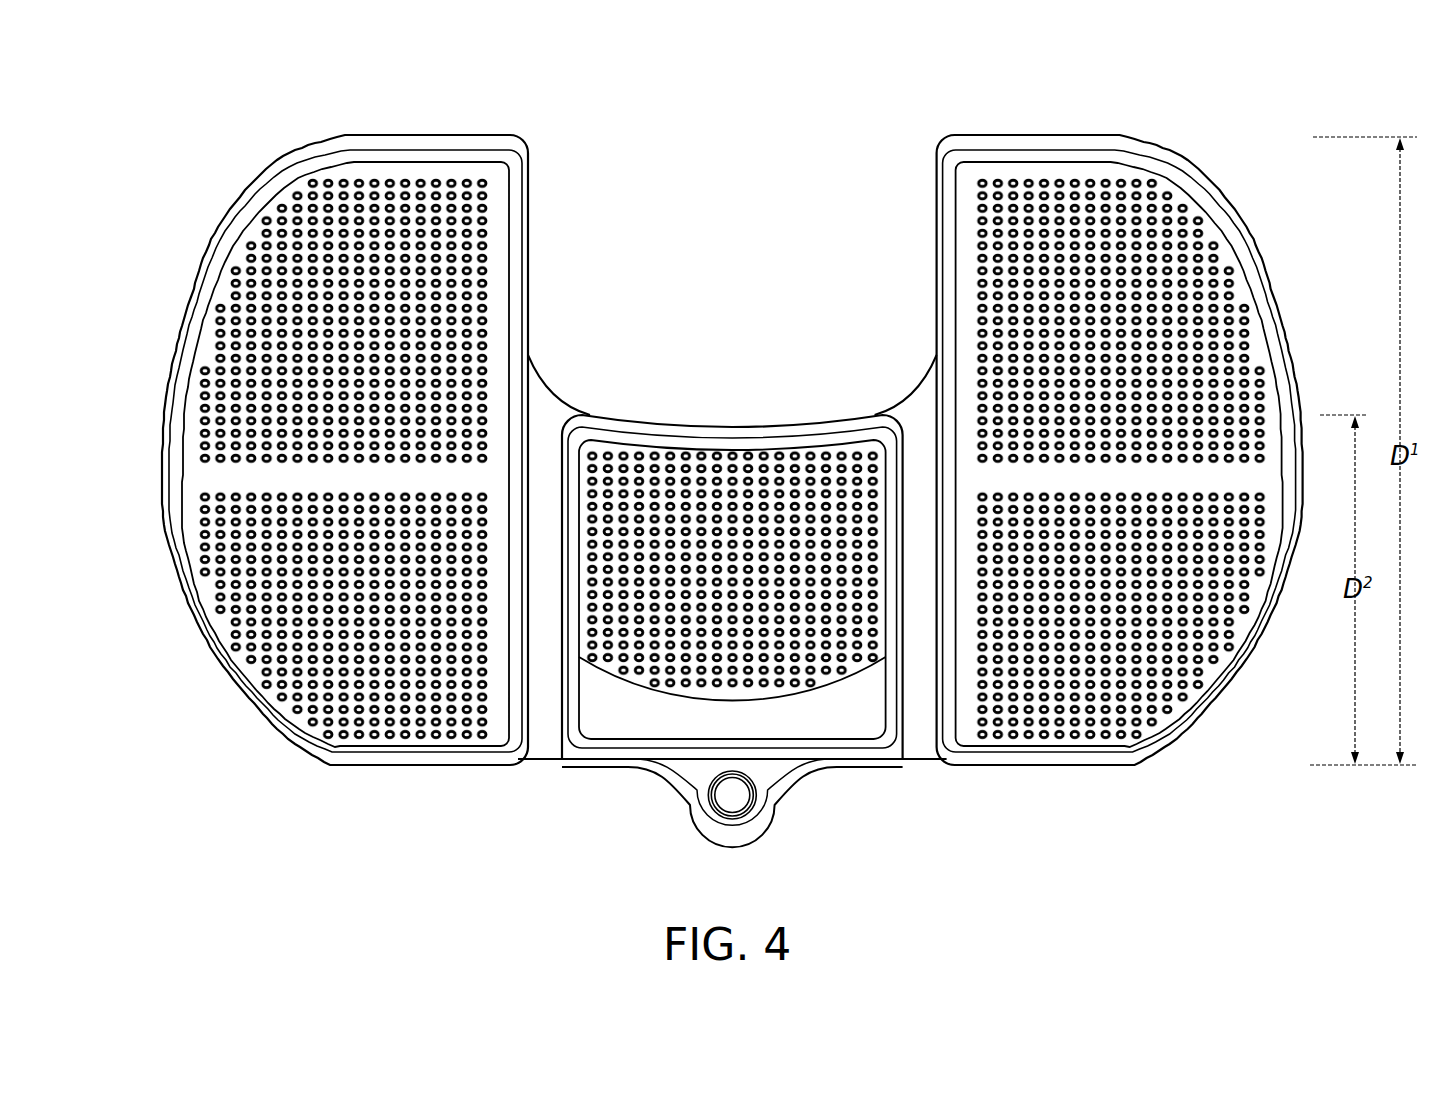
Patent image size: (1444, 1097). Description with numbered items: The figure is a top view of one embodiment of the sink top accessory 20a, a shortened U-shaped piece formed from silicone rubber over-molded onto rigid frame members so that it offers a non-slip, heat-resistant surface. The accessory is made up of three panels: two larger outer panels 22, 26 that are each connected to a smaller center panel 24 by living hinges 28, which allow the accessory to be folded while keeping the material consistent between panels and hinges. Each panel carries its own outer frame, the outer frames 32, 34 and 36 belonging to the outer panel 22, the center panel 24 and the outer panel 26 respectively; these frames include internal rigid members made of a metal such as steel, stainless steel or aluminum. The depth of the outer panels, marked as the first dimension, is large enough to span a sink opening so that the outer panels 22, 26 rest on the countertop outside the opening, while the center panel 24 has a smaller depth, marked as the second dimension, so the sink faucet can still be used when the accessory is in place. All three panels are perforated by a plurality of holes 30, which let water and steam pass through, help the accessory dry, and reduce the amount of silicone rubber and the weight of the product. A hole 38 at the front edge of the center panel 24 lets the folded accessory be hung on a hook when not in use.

The sink top accessory 20a is at (710, 458).
The outer panel 22 is at (334, 412).
The center panel 24 is at (732, 543).
The outer panel 26 is at (1120, 416).
The living hinge 28 is at (537, 748).
The holes 30 is at (202, 492).
The outer frame 32 is at (262, 177).
The outer frame 34 is at (837, 426).
The outer frame 36 is at (1122, 138).
The hole 38 is at (757, 808).